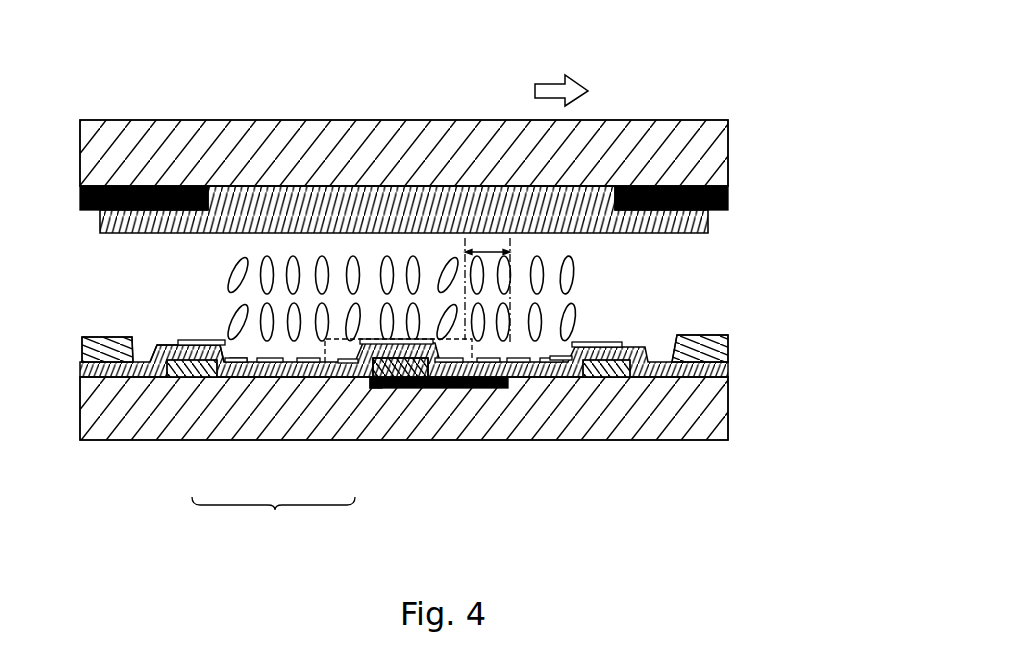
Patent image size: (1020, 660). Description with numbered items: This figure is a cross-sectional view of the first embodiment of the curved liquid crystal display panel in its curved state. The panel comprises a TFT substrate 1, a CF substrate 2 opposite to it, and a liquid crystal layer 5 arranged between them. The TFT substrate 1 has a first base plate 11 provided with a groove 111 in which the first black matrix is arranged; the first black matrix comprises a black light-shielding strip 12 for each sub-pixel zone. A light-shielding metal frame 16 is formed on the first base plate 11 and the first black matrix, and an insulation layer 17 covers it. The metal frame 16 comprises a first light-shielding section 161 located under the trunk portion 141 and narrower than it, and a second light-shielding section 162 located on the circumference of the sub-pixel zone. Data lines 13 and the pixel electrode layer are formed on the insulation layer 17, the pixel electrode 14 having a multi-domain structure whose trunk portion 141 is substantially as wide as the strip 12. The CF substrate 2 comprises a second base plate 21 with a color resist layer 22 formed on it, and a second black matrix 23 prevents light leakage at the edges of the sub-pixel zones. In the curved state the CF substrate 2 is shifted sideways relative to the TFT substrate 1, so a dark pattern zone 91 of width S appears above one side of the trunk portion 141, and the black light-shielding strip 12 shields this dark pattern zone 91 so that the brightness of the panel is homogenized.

The TFT substrate 1 is at (728, 378).
The first base plate 11 is at (615, 395).
The groove 111 is at (457, 388).
The black light-shielding strip 12 is at (438, 388).
The data line 13 is at (98, 354).
The pixel electrode 14 is at (568, 345).
The trunk portion 141 is at (402, 388).
The light-shielding metal frame 16 is at (252, 441).
The first light-shielding section 161 is at (380, 388).
The second light-shielding section 162 is at (190, 376).
The insulation layer 17 is at (672, 363).
The CF substrate 2 is at (728, 178).
The second base plate 21 is at (245, 153).
The color resist layer 22 is at (345, 200).
The second black matrix 23 is at (133, 187).
The liquid crystal layer 5 is at (572, 320).
The dark pattern zone 91 is at (500, 338).